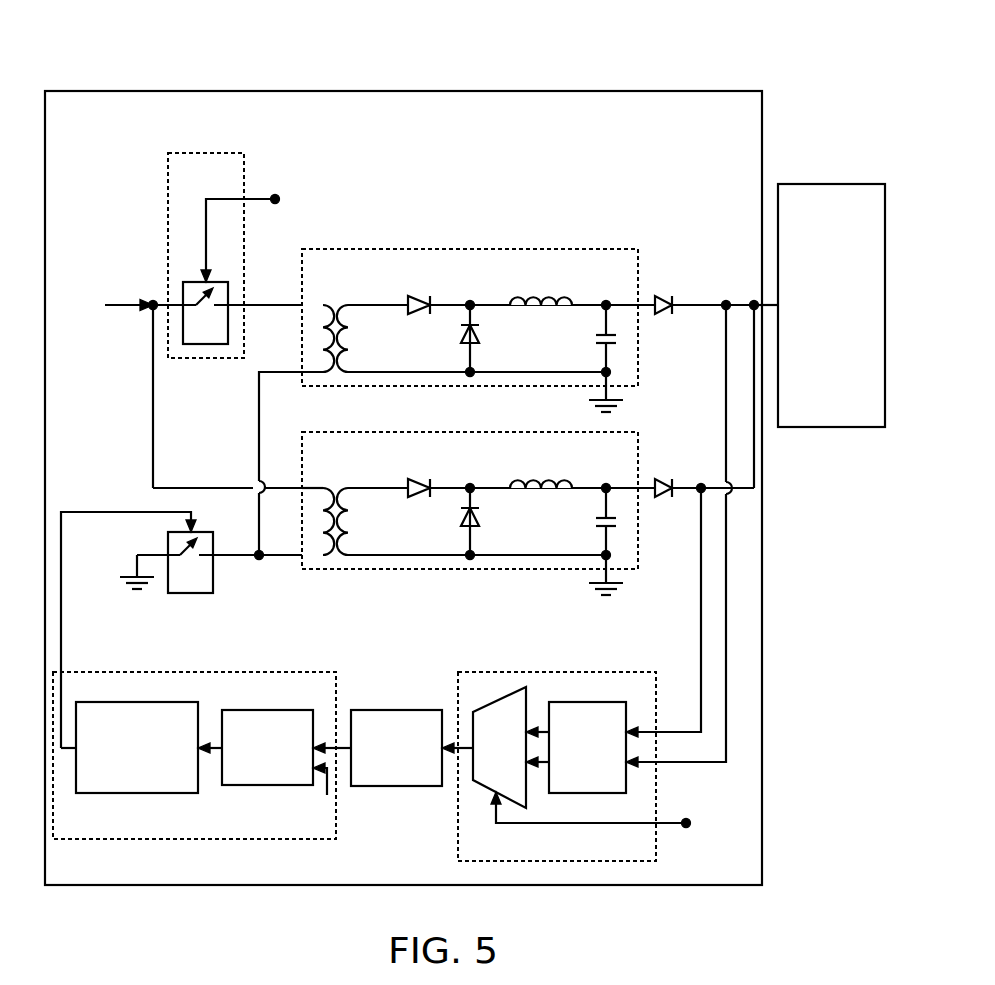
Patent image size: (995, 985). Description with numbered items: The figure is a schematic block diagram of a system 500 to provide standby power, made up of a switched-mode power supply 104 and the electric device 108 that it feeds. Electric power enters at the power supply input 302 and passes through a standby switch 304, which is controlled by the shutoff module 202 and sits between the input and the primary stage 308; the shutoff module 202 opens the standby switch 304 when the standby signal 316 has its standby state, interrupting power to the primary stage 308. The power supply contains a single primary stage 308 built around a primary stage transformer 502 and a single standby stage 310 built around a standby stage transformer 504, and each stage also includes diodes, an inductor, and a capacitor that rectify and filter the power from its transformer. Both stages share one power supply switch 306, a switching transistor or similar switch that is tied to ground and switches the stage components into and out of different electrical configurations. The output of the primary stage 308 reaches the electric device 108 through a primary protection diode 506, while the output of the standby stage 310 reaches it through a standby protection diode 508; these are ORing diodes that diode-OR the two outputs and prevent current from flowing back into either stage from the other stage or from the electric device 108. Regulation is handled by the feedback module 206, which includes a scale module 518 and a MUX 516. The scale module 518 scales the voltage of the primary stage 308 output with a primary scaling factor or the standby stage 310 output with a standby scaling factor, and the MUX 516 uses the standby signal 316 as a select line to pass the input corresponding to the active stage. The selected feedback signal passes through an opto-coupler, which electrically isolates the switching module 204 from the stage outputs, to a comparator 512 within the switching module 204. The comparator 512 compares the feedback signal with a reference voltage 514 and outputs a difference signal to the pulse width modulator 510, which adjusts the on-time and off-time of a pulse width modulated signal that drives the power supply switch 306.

The system 500 is at (90, 36).
The switched-mode power supply 104 is at (387, 141).
The electric device 108 is at (817, 339).
The shutoff module 202 is at (190, 178).
The switching module 204 is at (177, 835).
The feedback module 206 is at (572, 854).
The power supply input 302 is at (130, 304).
The standby switch 304 is at (190, 337).
The power supply switch 306 is at (174, 584).
The primary stage 308 is at (478, 330).
The standby stage 310 is at (478, 513).
The standby signal 316 is at (276, 197).
The primary stage transformer 502 is at (347, 302).
The standby stage transformer 504 is at (347, 485).
The primary protection diode 506 is at (663, 296).
The standby protection diode 508 is at (663, 479).
The pulse width modulator 510 is at (153, 781).
The comparator 512 is at (283, 781).
The reference voltage 514 is at (320, 818).
The MUX 516 is at (484, 769).
The scale module 518 is at (603, 781).